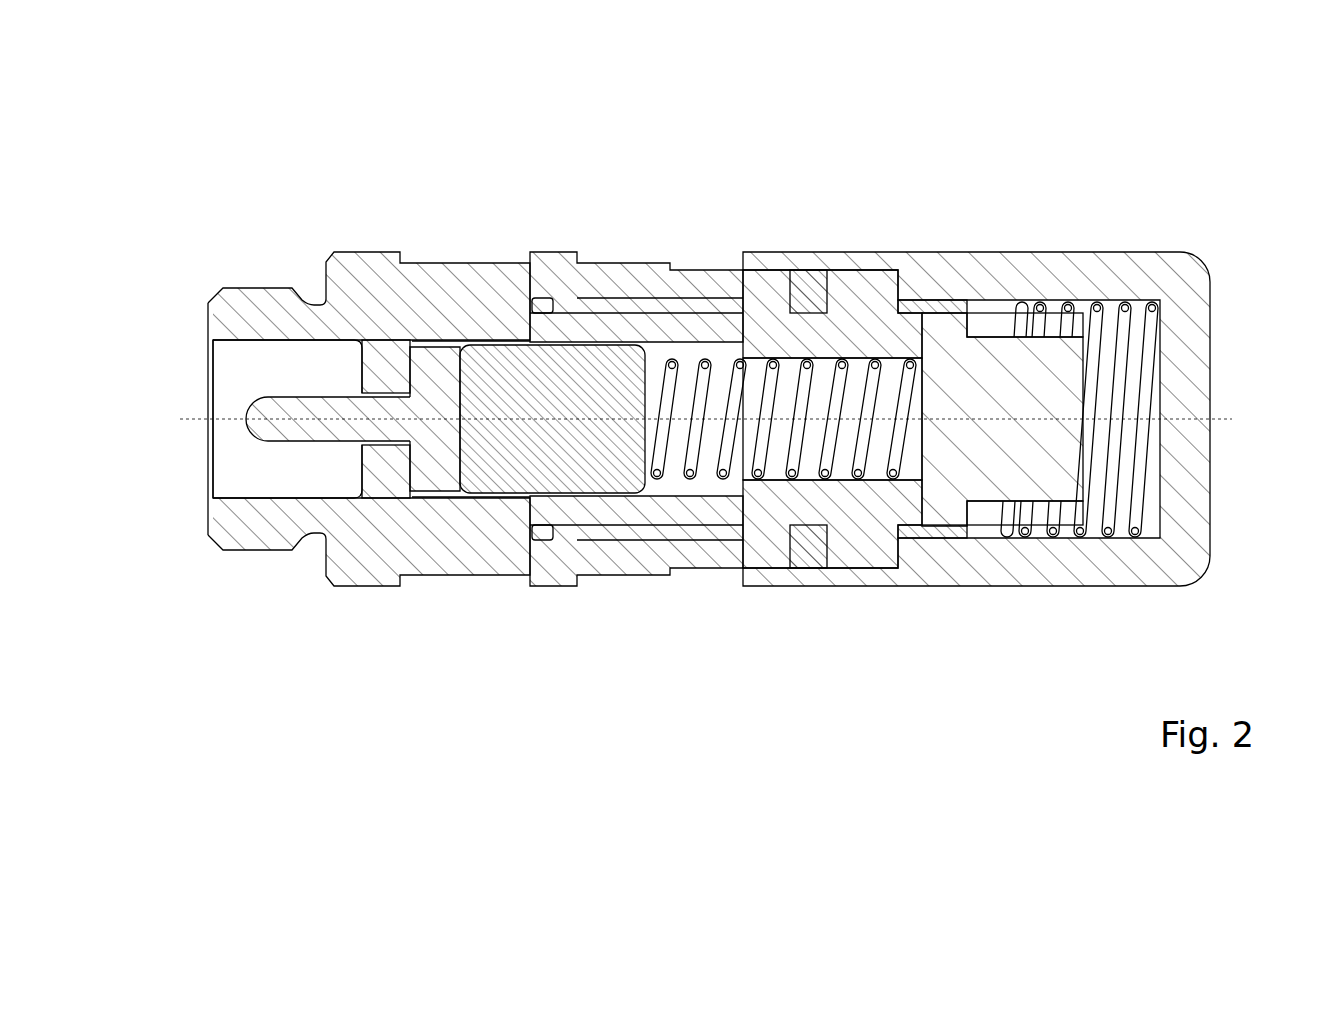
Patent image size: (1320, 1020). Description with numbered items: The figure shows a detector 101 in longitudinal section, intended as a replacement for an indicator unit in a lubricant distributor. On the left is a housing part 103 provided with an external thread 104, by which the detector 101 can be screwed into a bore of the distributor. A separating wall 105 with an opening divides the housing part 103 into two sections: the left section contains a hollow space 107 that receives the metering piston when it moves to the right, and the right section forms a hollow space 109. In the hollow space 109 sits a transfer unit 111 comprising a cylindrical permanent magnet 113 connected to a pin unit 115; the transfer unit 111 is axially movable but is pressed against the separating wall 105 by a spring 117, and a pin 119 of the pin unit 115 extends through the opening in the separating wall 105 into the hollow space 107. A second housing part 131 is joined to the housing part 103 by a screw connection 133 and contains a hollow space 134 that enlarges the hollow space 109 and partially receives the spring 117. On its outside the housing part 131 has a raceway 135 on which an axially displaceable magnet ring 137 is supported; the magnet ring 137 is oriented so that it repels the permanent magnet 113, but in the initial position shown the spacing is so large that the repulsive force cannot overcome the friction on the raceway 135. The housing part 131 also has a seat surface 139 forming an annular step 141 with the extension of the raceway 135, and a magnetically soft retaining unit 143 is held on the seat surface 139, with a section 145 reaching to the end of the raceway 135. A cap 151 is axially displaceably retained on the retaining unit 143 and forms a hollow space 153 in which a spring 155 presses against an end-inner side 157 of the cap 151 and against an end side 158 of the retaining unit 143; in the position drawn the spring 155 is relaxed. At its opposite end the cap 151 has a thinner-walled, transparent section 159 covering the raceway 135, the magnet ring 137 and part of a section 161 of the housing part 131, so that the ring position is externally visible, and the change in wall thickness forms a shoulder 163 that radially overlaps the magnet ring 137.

The detector 101 is at (195, 276).
The housing part 103 is at (345, 270).
The external thread 104 is at (264, 298).
The separating wall 105 is at (382, 372).
The hollow space 107 is at (245, 388).
The hollow space 109 is at (655, 353).
The transfer unit 111 is at (464, 335).
The cylindrical permanent magnet 113 is at (510, 458).
The pin unit 115 is at (437, 453).
The spring 117 is at (689, 478).
The pin 119 is at (294, 433).
The second housing part 131 is at (728, 555).
The screw connection 133 is at (685, 535).
The hollow space 134 is at (780, 455).
The raceway 135 is at (862, 548).
The magnet ring 137 is at (803, 287).
The seat surface 139 is at (998, 333).
The annular step 141 is at (968, 512).
The retaining unit 143 is at (997, 527).
The section 145 is at (947, 307).
The cap 151 is at (1107, 278).
The hollow space 153 is at (1152, 527).
The spring 155 is at (1152, 338).
The end-inner side 157 is at (1166, 440).
The end side 158 is at (1024, 298).
The section 159 is at (870, 575).
The section 161 is at (762, 270).
The shoulder 163 is at (882, 284).